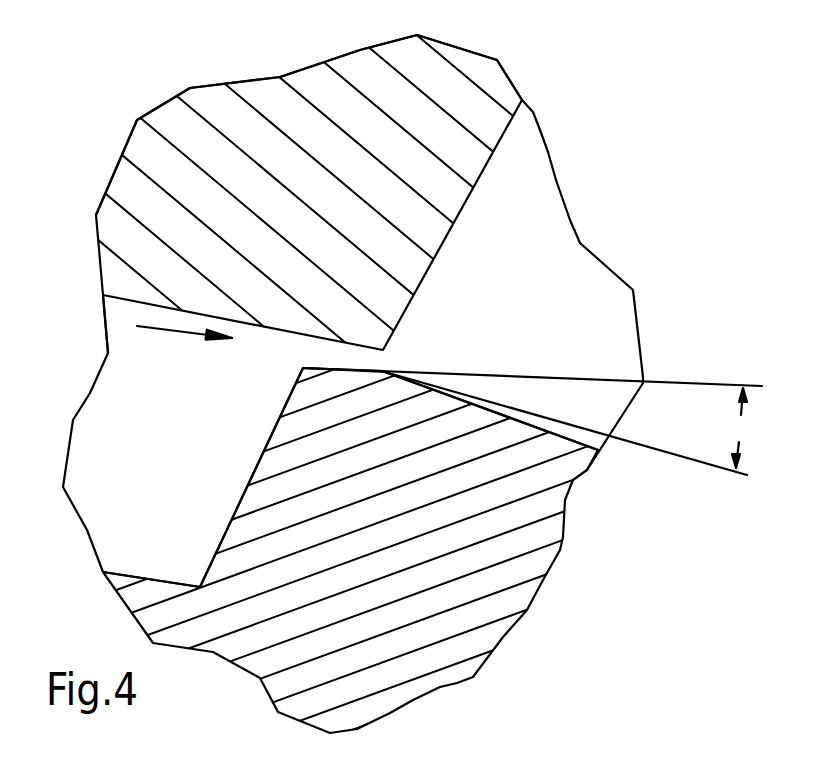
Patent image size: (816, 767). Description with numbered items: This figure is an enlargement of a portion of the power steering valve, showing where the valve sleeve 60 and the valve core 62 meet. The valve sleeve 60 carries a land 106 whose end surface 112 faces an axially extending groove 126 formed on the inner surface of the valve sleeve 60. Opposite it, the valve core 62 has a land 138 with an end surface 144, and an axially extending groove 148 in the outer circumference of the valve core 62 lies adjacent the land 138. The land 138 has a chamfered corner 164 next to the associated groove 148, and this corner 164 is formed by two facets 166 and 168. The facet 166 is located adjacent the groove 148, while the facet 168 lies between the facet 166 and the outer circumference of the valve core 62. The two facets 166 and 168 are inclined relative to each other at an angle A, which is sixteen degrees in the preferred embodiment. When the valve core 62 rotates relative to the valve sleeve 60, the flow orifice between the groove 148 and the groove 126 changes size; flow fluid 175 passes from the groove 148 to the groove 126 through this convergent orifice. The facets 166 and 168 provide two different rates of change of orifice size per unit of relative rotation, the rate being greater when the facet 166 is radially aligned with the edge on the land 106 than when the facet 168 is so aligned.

The valve sleeve 60 is at (440, 120).
The valve core 62 is at (322, 706).
The land 106 is at (270, 217).
The end surface 112 is at (133, 298).
The groove 126 is at (536, 272).
The land 138 is at (332, 581).
The end surface 144 is at (566, 427).
The groove 148 is at (159, 505).
The chamfered corner 164 is at (355, 404).
The facet 166 is at (333, 368).
The facet 168 is at (462, 395).
The flow fluid 175 is at (170, 330).
The angle A is at (742, 428).